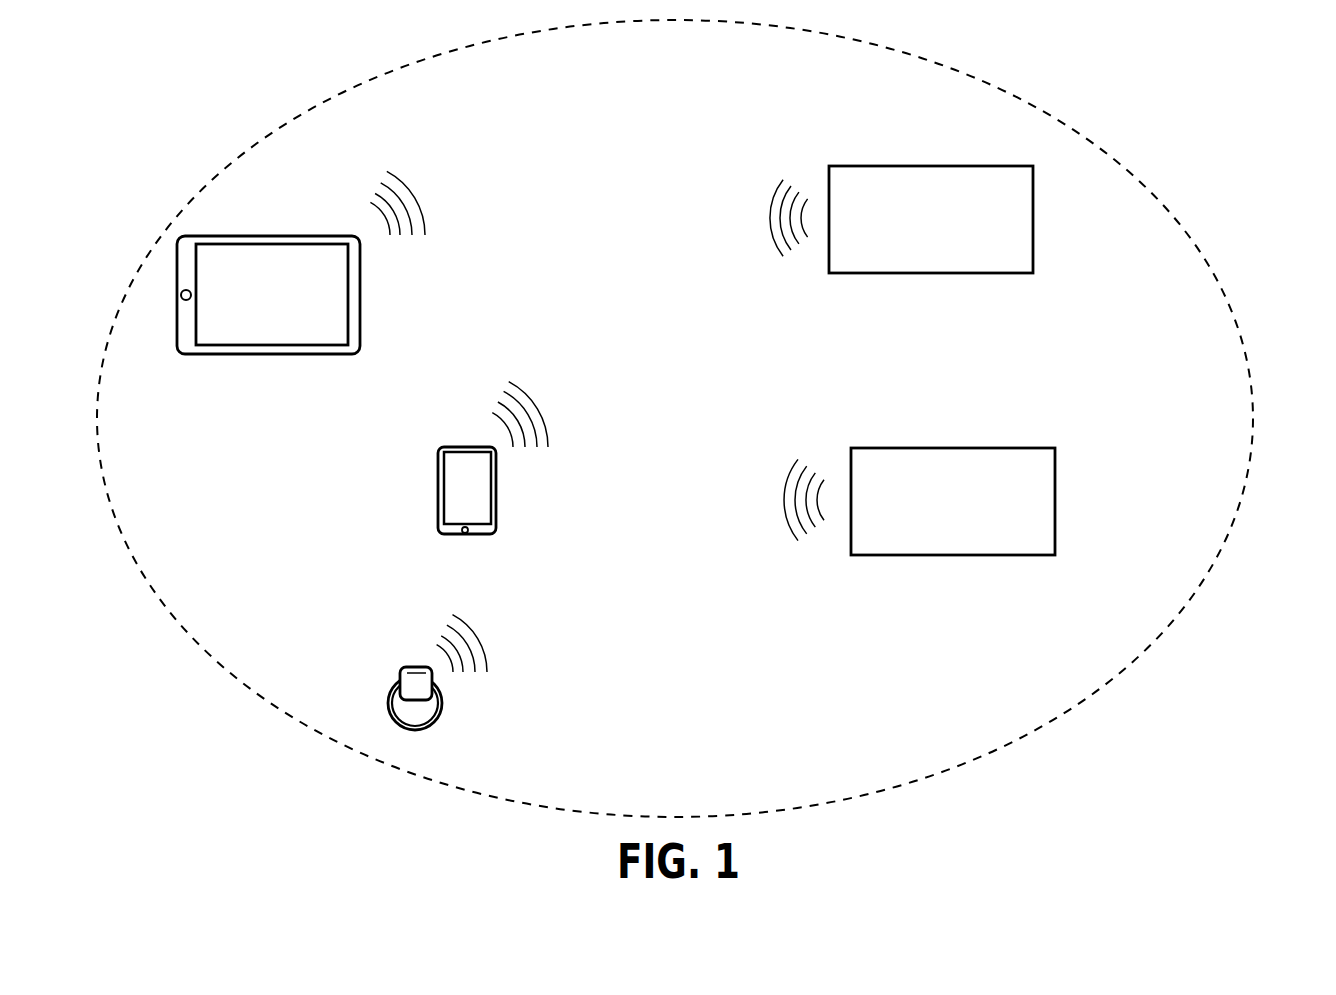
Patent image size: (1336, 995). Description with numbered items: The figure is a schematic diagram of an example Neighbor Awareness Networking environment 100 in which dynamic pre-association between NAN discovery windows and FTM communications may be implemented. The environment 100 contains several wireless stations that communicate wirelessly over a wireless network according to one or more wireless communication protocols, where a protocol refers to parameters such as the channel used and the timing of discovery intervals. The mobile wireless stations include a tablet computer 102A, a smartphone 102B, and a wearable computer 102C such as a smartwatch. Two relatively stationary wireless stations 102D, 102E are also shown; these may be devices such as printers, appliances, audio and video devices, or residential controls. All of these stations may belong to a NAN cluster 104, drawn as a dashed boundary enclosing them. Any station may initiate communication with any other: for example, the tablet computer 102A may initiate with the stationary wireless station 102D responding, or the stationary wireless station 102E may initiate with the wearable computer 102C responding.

The Neighbor Awareness Networking (NAN) environment 100 is at (1172, 111).
The tablet computer 102A is at (362, 293).
The smartphone 102B is at (496, 490).
The wearable computer 102C is at (440, 697).
The stationary wireless station 102D is at (1033, 218).
The stationary wireless station 102E is at (1055, 500).
The NAN cluster 104 is at (1217, 280).